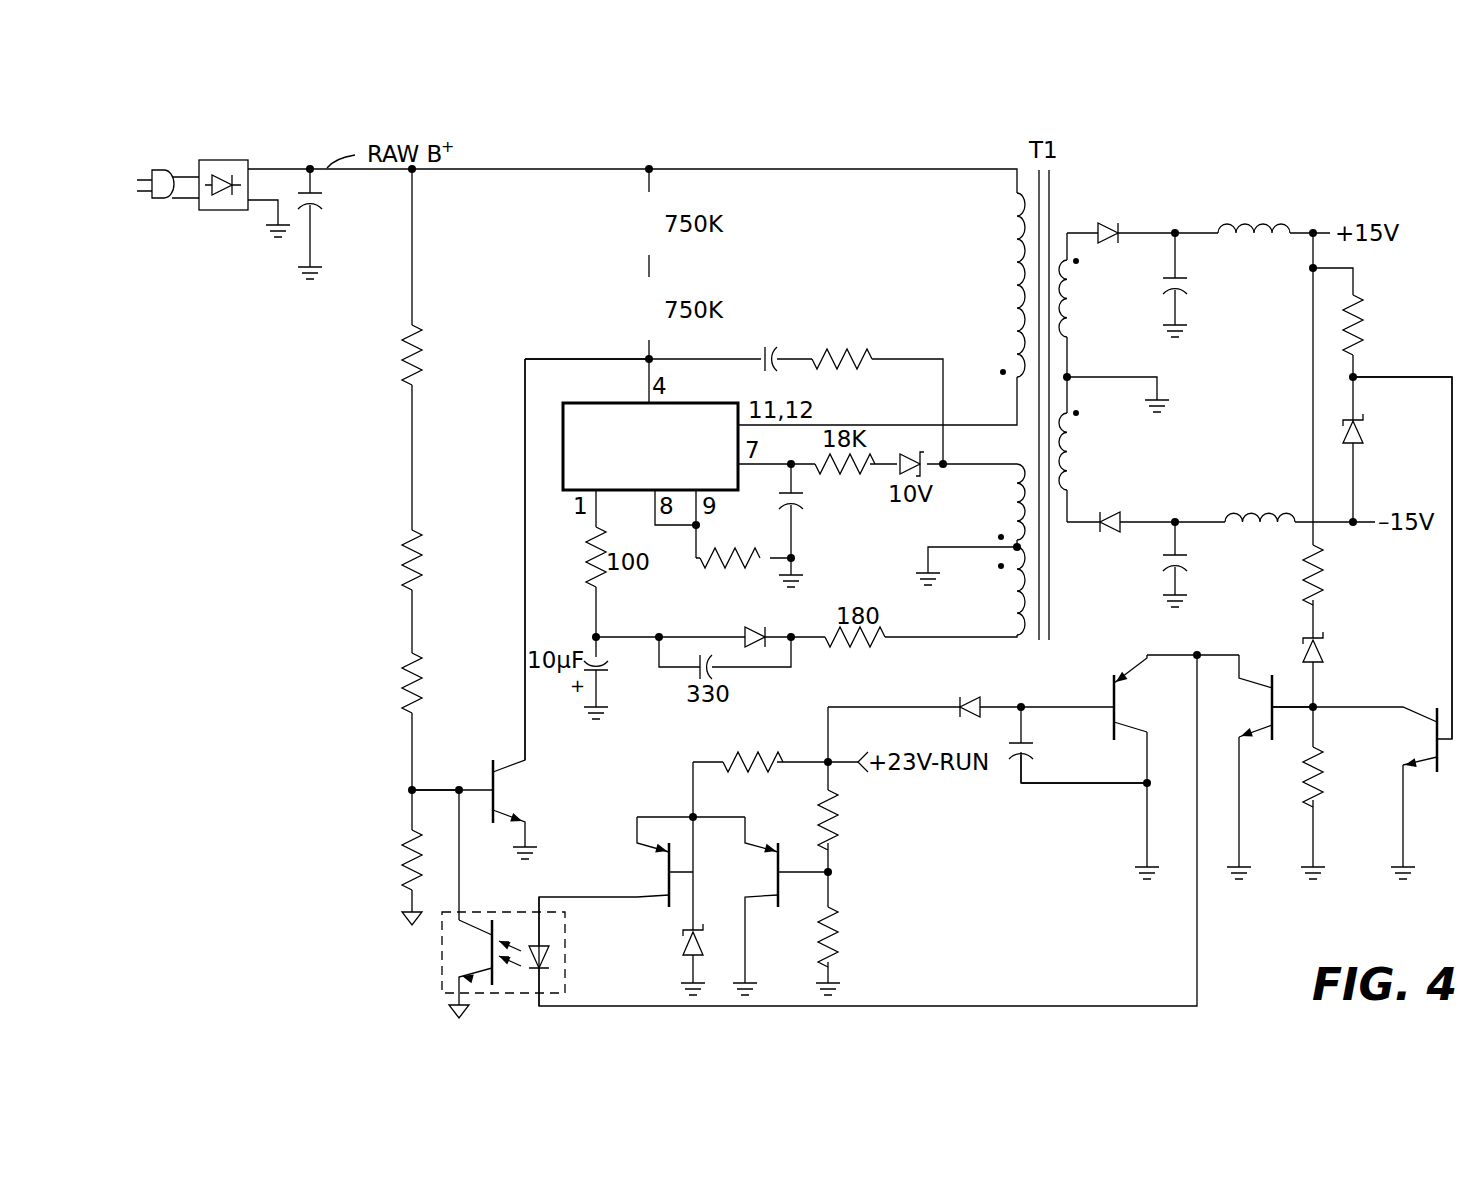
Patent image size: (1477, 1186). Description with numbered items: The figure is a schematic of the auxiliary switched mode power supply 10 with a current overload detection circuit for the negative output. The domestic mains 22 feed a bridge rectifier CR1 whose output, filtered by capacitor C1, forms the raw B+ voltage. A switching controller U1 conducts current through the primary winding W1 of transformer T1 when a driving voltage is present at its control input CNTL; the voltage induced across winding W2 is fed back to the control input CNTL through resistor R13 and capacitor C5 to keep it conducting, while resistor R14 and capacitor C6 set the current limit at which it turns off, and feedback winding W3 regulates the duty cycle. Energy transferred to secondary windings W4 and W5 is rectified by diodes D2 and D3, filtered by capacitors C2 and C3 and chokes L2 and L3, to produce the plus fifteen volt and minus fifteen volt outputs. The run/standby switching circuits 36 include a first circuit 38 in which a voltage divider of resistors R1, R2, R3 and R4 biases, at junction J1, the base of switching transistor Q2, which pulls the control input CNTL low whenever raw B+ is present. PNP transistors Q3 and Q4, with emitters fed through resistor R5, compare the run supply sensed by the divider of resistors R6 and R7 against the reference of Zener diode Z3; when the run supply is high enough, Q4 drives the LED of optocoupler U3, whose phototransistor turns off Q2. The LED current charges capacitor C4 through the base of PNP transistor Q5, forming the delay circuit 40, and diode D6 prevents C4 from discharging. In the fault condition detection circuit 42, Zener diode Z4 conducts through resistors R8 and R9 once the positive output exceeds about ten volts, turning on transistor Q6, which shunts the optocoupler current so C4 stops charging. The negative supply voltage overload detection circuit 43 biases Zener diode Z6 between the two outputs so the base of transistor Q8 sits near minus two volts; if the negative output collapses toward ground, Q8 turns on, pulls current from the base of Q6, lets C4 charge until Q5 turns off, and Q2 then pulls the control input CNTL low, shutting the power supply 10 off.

The switched mode power supply 10 is at (854, 252).
The domestic mains 22 is at (166, 200).
The bridge rectifier CR1 is at (212, 210).
The capacitor C1 is at (348, 218).
The resistor R1 is at (382, 355).
The resistor R2 is at (382, 564).
The resistor R3 is at (382, 686).
The resistor R4 is at (376, 860).
The junction J1 is at (412, 790).
The switching transistor Q2 is at (500, 776).
The first circuit 38 is at (498, 884).
The optocoupler U3 is at (442, 970).
The control input CNTL is at (636, 380).
The switching controller U1 is at (563, 458).
The capacitor C5 is at (777, 329).
The resistor R13 is at (1115, 328).
The capacitor C6 is at (808, 519).
The resistor R14 is at (743, 573).
The transformer T1 is at (1044, 405).
The primary winding W1 is at (1017, 305).
The winding W2 is at (1015, 506).
The feedback winding W3 is at (1015, 611).
The secondary winding W4 is at (1070, 298).
The secondary winding W5 is at (1070, 449).
The diode D2 is at (1121, 219).
The choke L2 is at (1252, 229).
The capacitor C2 is at (1215, 279).
The diode D3 is at (1121, 535).
The choke L3 is at (1264, 519).
The capacitor C3 is at (1215, 558).
The Zener diode Z6 is at (1377, 438).
The resistor R8 is at (1340, 575).
The negative supply voltage overload detection circuit 43 is at (1440, 535).
The Zener diode Z4 is at (1339, 656).
The fault condition detection circuit 42 is at (1288, 690).
The resistor R9 is at (1347, 777).
The PNP transistor Q5 is at (1118, 698).
The transistor Q6 is at (1262, 692).
The transistor Q8 is at (1430, 724).
The delay circuit 40 is at (1116, 805).
The capacitor C4 is at (1073, 745).
The diode D6 is at (972, 693).
The run/standby switching circuits 36 is at (1260, 949).
The resistor R5 is at (750, 737).
The resistor R6 is at (863, 820).
The resistor R7 is at (863, 937).
The PNP transistor Q4 is at (665, 868).
The PNP transistor Q3 is at (774, 868).
The Zener diode Z3 is at (670, 951).